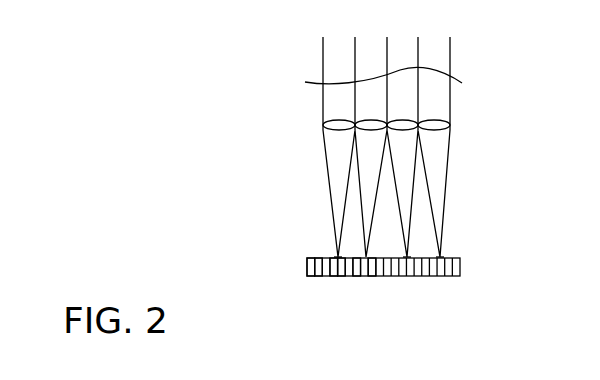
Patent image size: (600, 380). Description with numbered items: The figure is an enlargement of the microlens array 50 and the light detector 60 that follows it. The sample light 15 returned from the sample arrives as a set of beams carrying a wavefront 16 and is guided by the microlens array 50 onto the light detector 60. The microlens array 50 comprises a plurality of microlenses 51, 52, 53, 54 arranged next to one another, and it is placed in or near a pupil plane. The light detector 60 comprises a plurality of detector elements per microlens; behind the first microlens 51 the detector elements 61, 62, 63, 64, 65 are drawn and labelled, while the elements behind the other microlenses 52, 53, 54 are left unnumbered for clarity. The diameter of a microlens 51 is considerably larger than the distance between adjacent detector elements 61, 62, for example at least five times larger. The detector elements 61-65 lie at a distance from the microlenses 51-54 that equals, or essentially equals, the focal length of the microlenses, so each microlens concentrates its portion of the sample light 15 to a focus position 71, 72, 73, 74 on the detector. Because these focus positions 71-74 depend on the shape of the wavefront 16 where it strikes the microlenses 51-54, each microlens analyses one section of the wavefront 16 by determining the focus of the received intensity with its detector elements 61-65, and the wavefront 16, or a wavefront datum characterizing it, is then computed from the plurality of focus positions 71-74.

The sample light 15 is at (333, 55).
The wavefront 16 is at (308, 83).
The microlens array 50 is at (355, 130).
The first microlens 51 is at (337, 120).
The microlens 52 is at (365, 133).
The microlens 53 is at (408, 112).
The microlens 54 is at (445, 134).
The light detector 60 is at (339, 279).
The detector element 61 is at (308, 253).
The detector element 62 is at (318, 277).
The detector element 63 is at (332, 252).
The detector element 64 is at (340, 277).
The detector element 65 is at (355, 277).
The focus position 71 is at (337, 277).
The focus position 72 is at (372, 277).
The focus position 73 is at (405, 255).
The focus position 74 is at (442, 252).